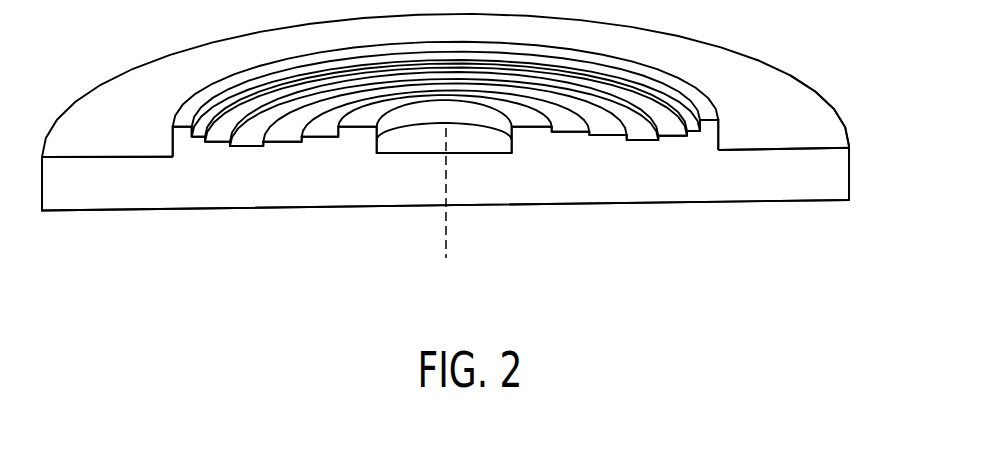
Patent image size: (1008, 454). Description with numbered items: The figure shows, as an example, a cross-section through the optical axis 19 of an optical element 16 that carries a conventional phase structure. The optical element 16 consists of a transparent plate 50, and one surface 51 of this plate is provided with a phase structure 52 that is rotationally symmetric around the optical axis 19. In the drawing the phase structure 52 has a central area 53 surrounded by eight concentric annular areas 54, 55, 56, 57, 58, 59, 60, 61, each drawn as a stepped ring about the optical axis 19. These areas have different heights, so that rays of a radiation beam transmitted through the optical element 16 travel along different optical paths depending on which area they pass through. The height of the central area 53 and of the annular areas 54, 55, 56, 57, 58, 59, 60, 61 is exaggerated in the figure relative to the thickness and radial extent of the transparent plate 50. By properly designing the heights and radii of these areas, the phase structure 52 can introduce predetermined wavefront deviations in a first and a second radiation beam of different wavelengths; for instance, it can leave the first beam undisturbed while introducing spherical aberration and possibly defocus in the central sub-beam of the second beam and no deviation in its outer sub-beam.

The optical element 16 is at (821, 38).
The optical axis 19 is at (443, 238).
The transparent plate 50 is at (828, 180).
The surface 51 is at (828, 147).
The phase structure 52 is at (477, 268).
The central area 53 is at (484, 153).
The annular area 54 is at (532, 127).
The annular area 55 is at (570, 132).
The annular area 56 is at (608, 135).
The annular area 57 is at (645, 140).
The annular area 58 is at (668, 136).
The annular area 59 is at (690, 131).
The annular area 60 is at (709, 121).
The annular area 61 is at (749, 150).